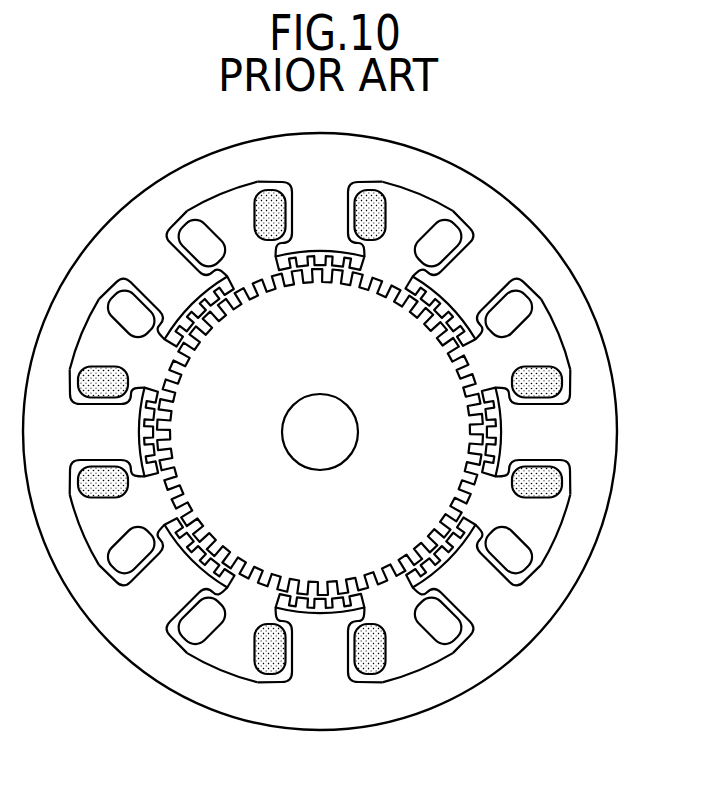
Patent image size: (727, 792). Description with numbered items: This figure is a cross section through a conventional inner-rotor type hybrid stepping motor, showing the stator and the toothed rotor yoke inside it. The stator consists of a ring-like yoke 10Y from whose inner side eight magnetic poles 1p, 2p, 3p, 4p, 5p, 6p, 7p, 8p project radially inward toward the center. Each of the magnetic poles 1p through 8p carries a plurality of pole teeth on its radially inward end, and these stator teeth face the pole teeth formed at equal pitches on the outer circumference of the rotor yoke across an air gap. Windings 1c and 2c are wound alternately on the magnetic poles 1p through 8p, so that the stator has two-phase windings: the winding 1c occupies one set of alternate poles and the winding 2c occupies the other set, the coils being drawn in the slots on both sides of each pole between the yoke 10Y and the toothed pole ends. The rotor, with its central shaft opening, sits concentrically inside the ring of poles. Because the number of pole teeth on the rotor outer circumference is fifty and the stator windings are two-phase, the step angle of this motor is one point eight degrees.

The ring-like yoke 10Y is at (507, 202).
The magnetic pole 1p is at (355, 220).
The magnetic pole 2p is at (490, 311).
The magnetic pole 3p is at (540, 467).
The magnetic pole 4p is at (441, 602).
The magnetic pole 5p is at (284, 648).
The magnetic pole 6p is at (149, 553).
The magnetic pole 7p is at (108, 396).
The magnetic pole 8p is at (199, 261).
The winding 1c is at (320, 432).
The winding 2c is at (320, 432).